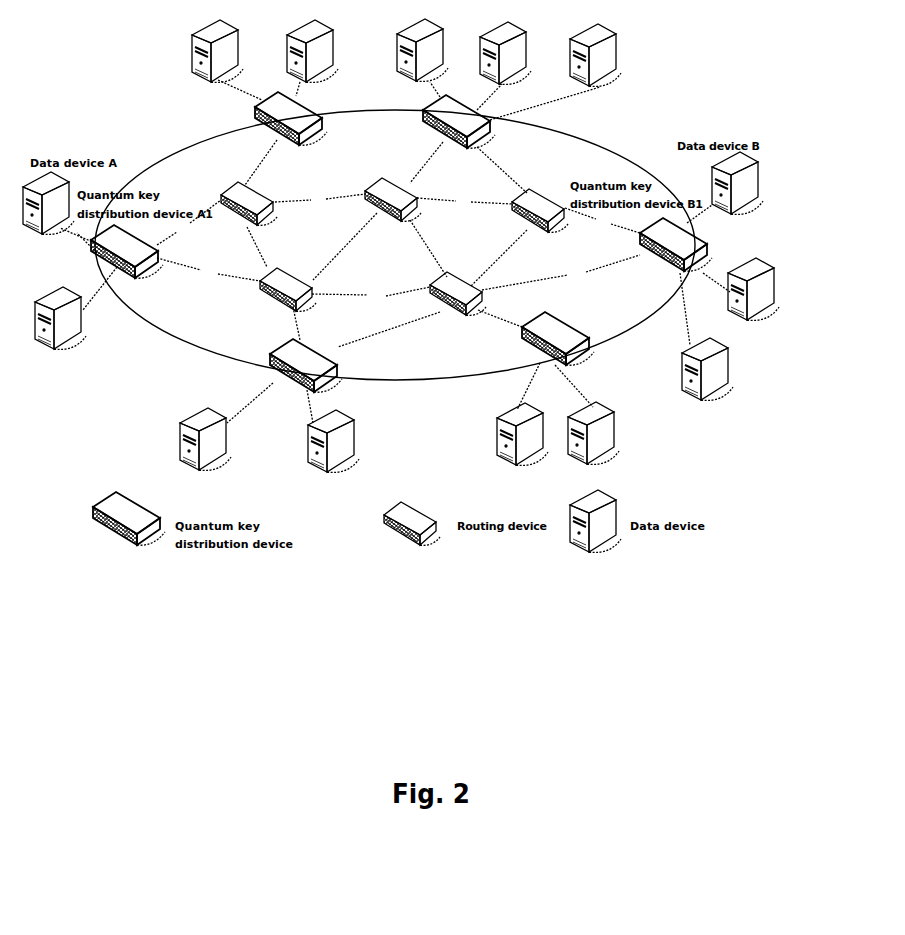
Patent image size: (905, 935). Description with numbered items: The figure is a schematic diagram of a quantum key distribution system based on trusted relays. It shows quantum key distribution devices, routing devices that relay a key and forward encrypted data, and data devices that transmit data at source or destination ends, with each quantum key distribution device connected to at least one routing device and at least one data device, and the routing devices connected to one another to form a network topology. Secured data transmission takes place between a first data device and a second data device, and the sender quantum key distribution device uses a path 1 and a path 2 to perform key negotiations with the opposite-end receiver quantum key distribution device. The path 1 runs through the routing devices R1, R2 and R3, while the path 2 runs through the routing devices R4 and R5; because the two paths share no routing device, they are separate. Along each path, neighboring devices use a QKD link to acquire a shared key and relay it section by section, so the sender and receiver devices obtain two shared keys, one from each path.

The path 1 is at (398, 219).
The path 2 is at (398, 282).
The routing device R1 is at (249, 203).
The routing device R2 is at (393, 199).
The routing device R3 is at (540, 210).
The routing device R4 is at (288, 289).
The routing device R5 is at (458, 293).